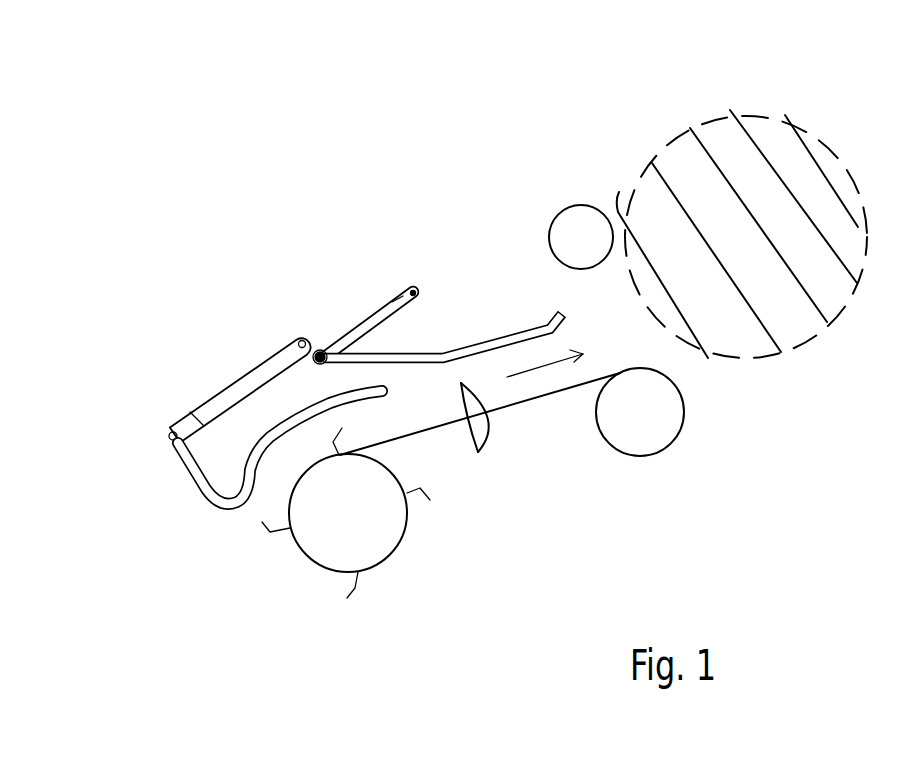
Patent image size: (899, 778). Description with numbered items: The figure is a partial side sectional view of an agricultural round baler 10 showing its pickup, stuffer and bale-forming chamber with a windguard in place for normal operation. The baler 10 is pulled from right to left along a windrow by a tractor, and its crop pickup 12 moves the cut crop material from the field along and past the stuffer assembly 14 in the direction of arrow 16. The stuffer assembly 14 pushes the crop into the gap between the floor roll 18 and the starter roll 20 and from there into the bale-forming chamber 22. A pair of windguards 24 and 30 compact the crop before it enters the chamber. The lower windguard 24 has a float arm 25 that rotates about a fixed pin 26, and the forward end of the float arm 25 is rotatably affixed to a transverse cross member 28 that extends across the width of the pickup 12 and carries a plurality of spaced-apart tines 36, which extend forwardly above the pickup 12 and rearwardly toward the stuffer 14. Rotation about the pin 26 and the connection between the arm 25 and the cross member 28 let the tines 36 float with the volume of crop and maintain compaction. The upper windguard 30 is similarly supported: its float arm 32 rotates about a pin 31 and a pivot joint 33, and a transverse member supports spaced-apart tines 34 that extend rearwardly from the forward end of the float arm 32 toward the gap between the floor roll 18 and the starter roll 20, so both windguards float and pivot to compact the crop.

The agricultural round baler 10 is at (419, 212).
The crop pickup 12 is at (427, 533).
The stuffer assembly 14 is at (498, 431).
The arrow 16 is at (538, 368).
The floor roll 18 is at (677, 438).
The starter roll 20 is at (580, 204).
The bale-forming chamber 22 is at (748, 28).
The lower windguard 24 is at (218, 327).
The float arm 25 is at (197, 420).
The fixed pin 26 is at (298, 338).
The transverse cross member 28 is at (167, 441).
The upper windguard 30 is at (377, 263).
The pin 31 is at (417, 288).
The float arm 32 is at (388, 310).
The pivot joint 33 is at (320, 363).
The tines 34 is at (497, 337).
The tines 36 is at (226, 510).